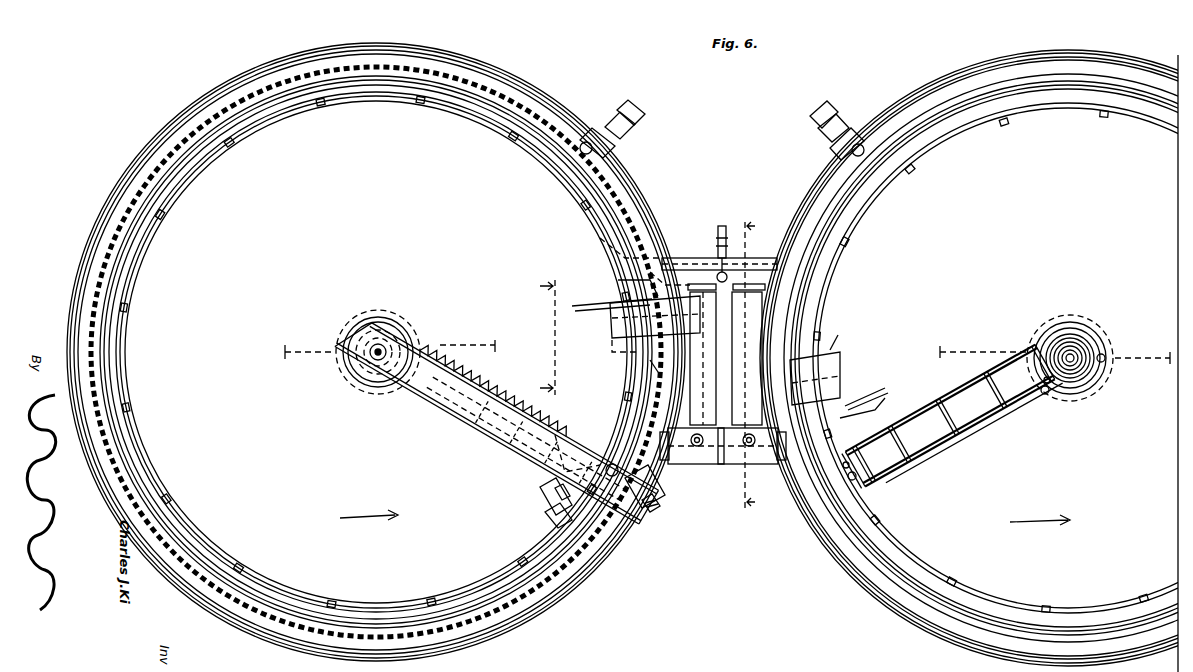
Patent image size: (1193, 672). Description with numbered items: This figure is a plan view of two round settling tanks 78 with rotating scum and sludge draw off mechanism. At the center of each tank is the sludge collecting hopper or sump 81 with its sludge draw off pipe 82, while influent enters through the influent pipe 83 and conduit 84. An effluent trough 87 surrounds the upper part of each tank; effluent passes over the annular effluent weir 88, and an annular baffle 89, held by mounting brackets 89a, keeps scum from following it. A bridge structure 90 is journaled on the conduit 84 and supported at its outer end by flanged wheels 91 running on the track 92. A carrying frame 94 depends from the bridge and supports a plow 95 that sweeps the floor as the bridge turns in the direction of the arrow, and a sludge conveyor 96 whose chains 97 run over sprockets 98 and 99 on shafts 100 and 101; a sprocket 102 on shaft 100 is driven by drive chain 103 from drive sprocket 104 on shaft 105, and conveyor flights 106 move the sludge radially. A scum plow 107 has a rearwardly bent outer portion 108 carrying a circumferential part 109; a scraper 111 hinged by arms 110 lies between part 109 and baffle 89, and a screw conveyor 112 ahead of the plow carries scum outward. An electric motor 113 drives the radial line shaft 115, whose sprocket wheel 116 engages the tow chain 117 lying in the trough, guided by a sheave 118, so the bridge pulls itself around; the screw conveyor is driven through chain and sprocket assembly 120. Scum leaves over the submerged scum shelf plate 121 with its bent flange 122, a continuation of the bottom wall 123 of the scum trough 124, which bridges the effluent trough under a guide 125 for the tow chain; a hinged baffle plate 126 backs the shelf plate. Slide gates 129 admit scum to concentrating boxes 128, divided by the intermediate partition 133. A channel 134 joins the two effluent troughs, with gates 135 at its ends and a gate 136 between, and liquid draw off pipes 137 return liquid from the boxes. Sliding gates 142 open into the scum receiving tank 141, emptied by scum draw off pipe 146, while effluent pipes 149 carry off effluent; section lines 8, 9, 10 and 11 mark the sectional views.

The section line 8- 8 is at (750, 362).
The section line 9- 9 is at (582, 327).
The section line 10- 10 is at (557, 336).
The section line 11- 11 is at (640, 98).
The round settling tank 78 is at (665, 337).
The sludge collecting hopper or sump 81 is at (380, 318).
The sludge draw off pipe 82 is at (300, 343).
The influent pipe 83 is at (472, 342).
The conduit 84 is at (1082, 348).
The effluent trough 87 is at (612, 180).
The annular effluent weir 88 is at (470, 118).
The annular baffle 89 is at (410, 108).
The mounting brackets 89a is at (305, 115).
The bridge structure 90 is at (360, 362).
The flanged wheels 91 is at (620, 528).
The track 92 is at (565, 590).
The carrying frame 94 is at (950, 448).
The plow 95 is at (962, 390).
The sludge conveyor 96 is at (940, 415).
The chains 97 is at (1000, 410).
The sprocket 98 is at (460, 400).
The sprocket 99 is at (1048, 398).
The shaft 100 is at (430, 430).
The shaft 101 is at (1040, 388).
The sprocket 102 is at (445, 428).
The drive chain 103 is at (455, 440).
The drive sprocket 104 is at (480, 440).
The shaft 105 is at (508, 428).
The conveyor flights 106 is at (920, 430).
The scum plow 107 is at (512, 398).
The outer portion of scum plow 108 is at (540, 440).
The part 109 is at (551, 488).
The arms 110 is at (570, 494).
The scraper 111 is at (548, 512).
The screw conveyor 112 is at (537, 403).
The electric motor 113 is at (612, 462).
The radial line shaft 115 is at (590, 440).
The sprocket wheel 116 is at (650, 510).
The tow chain 117 is at (500, 615).
The sheave 118 is at (660, 498).
The chain and sprocket assembly 120 is at (425, 332).
The scum shelf plate 121 is at (610, 318).
The downwardly bent edge or flange 122 is at (630, 342).
The bottom wall 123 is at (648, 365).
The scum trough 124 is at (618, 282).
The guide 125 is at (665, 258).
The baffle plate 126 is at (592, 305).
The concentrating boxes or chambers 128 is at (725, 358).
The slide gate 129 is at (715, 332).
The intermediate partition 133 is at (749, 324).
The channel 134 is at (712, 465).
The gates 135 is at (672, 462).
The gate 136 is at (724, 465).
The liquid draw off pipe 137 is at (698, 432).
The scum receiving tank or box 141 is at (712, 258).
The sliding gate 142 is at (762, 282).
The scum draw off pipe 146 is at (722, 224).
The effluent pipes 149 is at (618, 108).